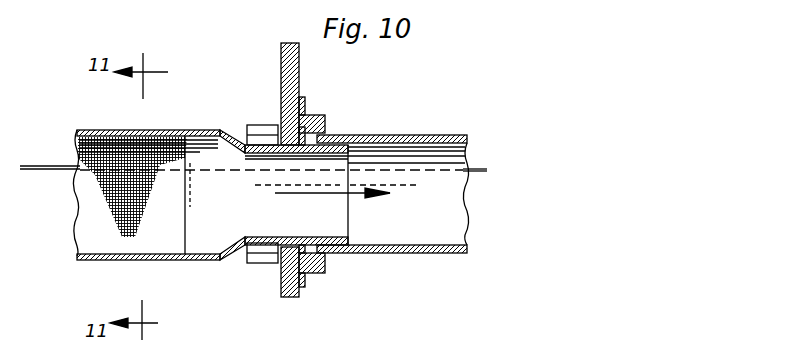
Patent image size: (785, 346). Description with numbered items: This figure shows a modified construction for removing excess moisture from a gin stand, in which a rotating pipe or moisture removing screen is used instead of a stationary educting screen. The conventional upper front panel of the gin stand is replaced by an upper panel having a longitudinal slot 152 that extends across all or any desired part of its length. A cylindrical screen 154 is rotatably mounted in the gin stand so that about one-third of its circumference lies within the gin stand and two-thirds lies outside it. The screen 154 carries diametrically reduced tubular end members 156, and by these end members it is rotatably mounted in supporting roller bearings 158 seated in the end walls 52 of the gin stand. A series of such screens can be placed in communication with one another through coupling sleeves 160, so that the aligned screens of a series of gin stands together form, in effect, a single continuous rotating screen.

The end wall 52 is at (290, 78).
The longitudinal slot 152 is at (40, 172).
The cylindrical screen 154 is at (97, 130).
The tubular end member 156 is at (348, 162).
The roller bearing 158 is at (263, 130).
The coupling sleeve 160 is at (360, 250).